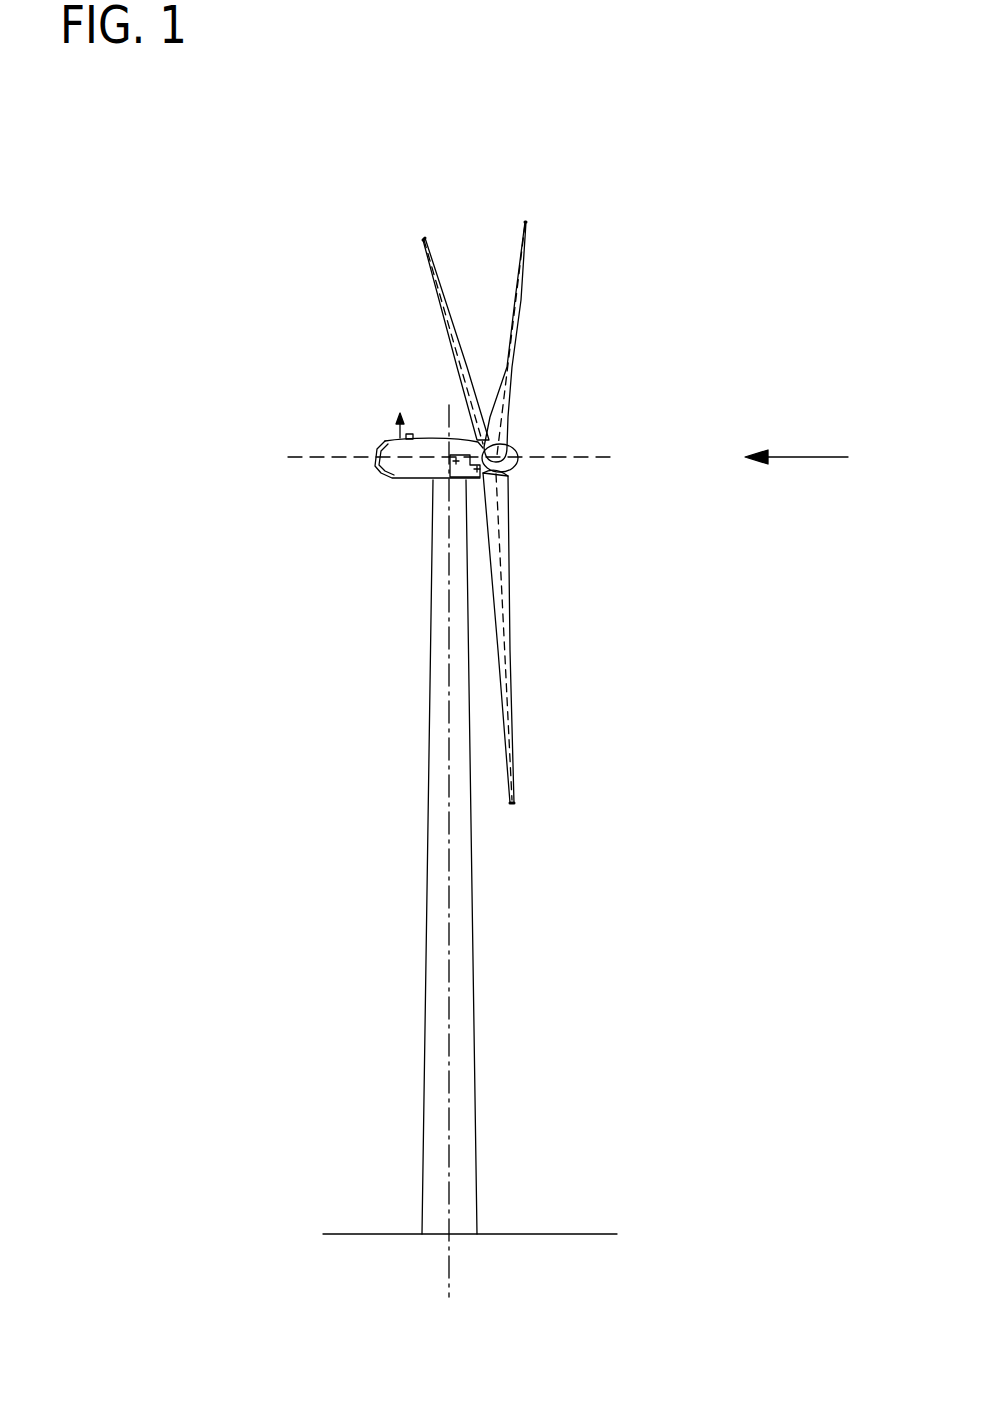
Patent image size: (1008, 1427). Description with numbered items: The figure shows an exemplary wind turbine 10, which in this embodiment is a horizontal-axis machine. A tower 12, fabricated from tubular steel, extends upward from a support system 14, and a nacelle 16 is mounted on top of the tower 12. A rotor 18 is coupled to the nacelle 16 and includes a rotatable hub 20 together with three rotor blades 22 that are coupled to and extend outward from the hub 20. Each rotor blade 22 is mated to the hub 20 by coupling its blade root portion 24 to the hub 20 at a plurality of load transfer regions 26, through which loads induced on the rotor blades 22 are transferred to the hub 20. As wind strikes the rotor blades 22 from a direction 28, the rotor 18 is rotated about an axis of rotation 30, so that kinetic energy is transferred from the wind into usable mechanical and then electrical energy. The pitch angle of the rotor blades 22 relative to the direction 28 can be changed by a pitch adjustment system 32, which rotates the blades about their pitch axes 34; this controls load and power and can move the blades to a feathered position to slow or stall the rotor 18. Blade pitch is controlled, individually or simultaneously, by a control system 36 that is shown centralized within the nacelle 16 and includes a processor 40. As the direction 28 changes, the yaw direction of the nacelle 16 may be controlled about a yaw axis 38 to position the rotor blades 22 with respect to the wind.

The wind turbine 10 is at (212, 250).
The tower 12 is at (435, 1010).
The support system 14 is at (380, 1233).
The nacelle 16 is at (411, 457).
The rotor 18 is at (505, 504).
The rotatable hub 20 is at (517, 452).
The rotor blade 22 is at (443, 305).
The blade root portion 24 is at (505, 560).
The load transfer region 26 is at (505, 480).
The direction 28 is at (816, 456).
The axis of rotation 30 is at (583, 457).
The pitch adjustment system 32 is at (490, 510).
The pitch axis 34 is at (418, 240).
The control system 36 is at (448, 498).
The yaw axis 38 is at (450, 900).
The processor 40 is at (460, 440).